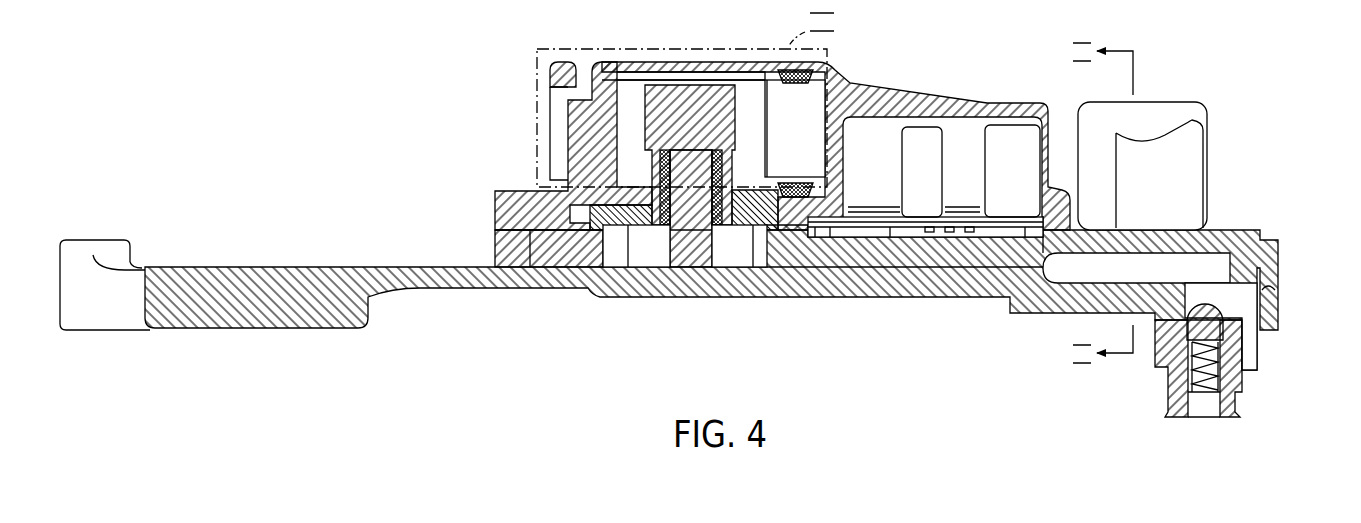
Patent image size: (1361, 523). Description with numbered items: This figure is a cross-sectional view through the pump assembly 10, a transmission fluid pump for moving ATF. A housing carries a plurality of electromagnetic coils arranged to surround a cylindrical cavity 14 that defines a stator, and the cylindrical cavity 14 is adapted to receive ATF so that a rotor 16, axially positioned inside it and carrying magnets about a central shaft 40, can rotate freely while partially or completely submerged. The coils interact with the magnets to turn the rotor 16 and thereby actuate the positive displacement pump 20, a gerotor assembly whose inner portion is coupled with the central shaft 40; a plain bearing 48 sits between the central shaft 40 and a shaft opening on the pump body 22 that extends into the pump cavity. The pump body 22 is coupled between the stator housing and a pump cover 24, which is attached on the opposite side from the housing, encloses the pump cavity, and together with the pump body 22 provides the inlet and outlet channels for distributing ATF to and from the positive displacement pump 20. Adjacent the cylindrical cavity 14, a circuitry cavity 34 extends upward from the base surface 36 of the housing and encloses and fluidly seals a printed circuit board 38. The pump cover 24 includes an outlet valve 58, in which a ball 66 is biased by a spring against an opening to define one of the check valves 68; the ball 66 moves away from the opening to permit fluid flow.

The pump assembly 10 is at (302, 66).
The cylindrical cavity 14 is at (634, 80).
The rotor 16 is at (655, 108).
The positive displacement pump 20 is at (645, 250).
The pump body 22 is at (493, 248).
The pump cover 24 is at (135, 250).
The circuitry cavity 34 is at (882, 182).
The base surface 36 is at (548, 230).
The printed circuit board 38 is at (998, 217).
The central shaft 40 is at (712, 232).
The plain bearing 48 is at (712, 150).
The outlet valve 58 is at (1232, 428).
The ball 66 is at (1230, 315).
The check valves 68 is at (1212, 334).